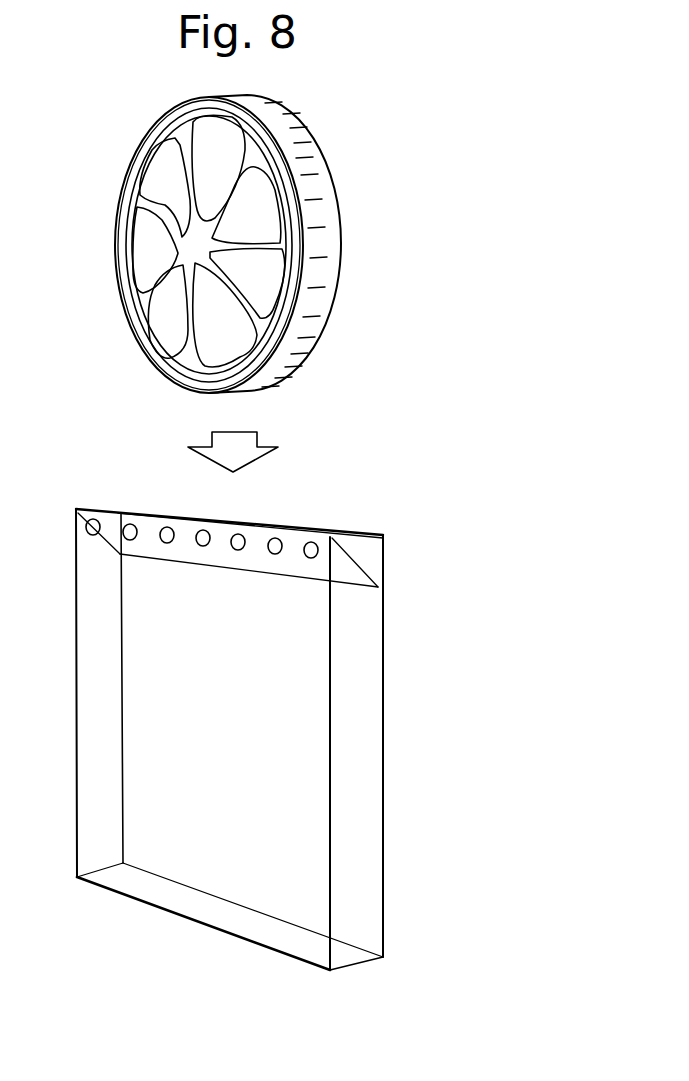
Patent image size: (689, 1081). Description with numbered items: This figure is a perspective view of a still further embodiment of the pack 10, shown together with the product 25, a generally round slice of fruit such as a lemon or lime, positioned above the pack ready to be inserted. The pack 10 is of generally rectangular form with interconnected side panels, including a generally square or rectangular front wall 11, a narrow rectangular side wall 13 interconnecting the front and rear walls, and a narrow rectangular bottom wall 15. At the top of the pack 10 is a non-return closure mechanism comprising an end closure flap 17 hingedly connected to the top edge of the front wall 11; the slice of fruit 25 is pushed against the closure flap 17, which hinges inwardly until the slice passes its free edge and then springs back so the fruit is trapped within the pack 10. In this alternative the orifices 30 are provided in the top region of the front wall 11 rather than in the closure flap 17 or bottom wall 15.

The product 25 is at (320, 167).
The pack 10 is at (363, 503).
The front wall 11 is at (140, 806).
The side wall 13 is at (362, 756).
The bottom wall 15 is at (302, 952).
The end closure flap 17 is at (345, 569).
The holes 30 is at (203, 531).